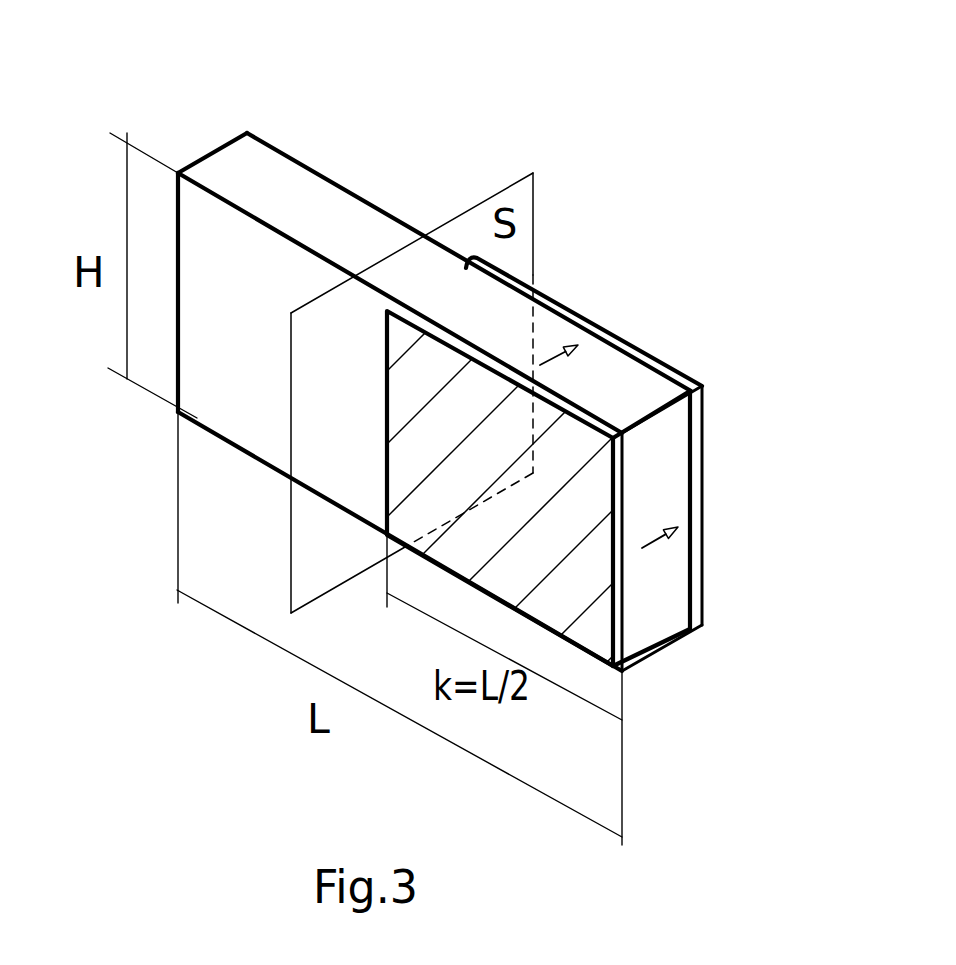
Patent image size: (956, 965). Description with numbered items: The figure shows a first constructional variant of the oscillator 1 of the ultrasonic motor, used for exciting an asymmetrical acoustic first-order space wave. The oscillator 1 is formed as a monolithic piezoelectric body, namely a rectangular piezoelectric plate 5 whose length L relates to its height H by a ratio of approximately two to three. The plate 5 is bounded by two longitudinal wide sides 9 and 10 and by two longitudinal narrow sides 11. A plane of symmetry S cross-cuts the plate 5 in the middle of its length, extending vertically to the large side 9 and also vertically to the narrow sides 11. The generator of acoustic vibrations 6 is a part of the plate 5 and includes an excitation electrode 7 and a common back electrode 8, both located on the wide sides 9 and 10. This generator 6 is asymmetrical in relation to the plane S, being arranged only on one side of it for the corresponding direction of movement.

The oscillator 1 is at (384, 142).
The piezoelectric plate 5 is at (266, 187).
The generator of acoustic vibrations 6 is at (615, 385).
The excitation electrode 7 is at (472, 537).
The common back electrode 8 is at (698, 453).
The longitudinal wide side 9 is at (219, 337).
The longitudinal wide side 10 is at (326, 143).
The longitudinal narrow sides 11 is at (388, 222).